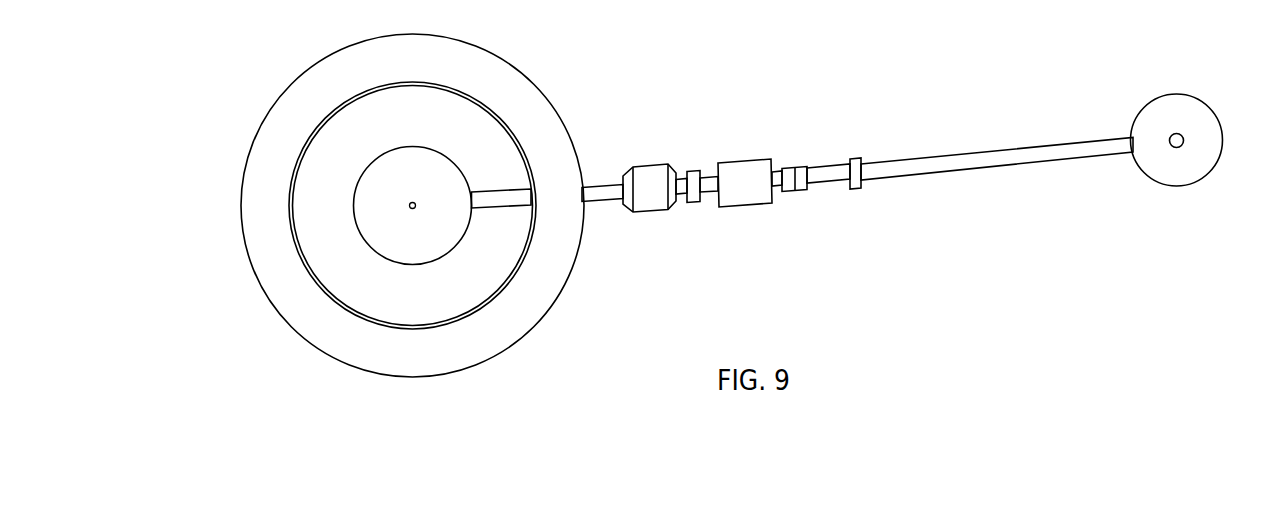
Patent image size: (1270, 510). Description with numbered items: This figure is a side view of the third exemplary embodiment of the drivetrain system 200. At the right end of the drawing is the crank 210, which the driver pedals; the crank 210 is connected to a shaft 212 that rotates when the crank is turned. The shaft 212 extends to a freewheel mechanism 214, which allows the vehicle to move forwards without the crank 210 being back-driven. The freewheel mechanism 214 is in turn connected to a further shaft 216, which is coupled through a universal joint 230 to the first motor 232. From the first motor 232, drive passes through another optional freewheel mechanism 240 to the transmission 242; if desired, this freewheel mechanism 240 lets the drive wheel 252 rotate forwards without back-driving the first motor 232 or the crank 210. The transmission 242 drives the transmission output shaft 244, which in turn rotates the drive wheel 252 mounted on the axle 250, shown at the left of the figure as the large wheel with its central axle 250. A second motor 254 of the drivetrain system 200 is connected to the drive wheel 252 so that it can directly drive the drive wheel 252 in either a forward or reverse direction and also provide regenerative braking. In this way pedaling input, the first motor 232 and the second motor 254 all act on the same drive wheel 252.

The drivetrain system 200 is at (281, 56).
The crank 210 is at (1183, 187).
The shaft 212 is at (1053, 142).
The freewheel mechanism 214 is at (855, 158).
The shaft 216 is at (829, 181).
The universal joint 230 is at (801, 168).
The first motor 232 is at (757, 205).
The freewheel mechanism 240 is at (697, 173).
The transmission 242 is at (658, 211).
The transmission output shaft 244 is at (593, 183).
The axle 250 is at (410, 208).
The drive wheel 252 is at (273, 306).
The second motor 254 is at (356, 228).